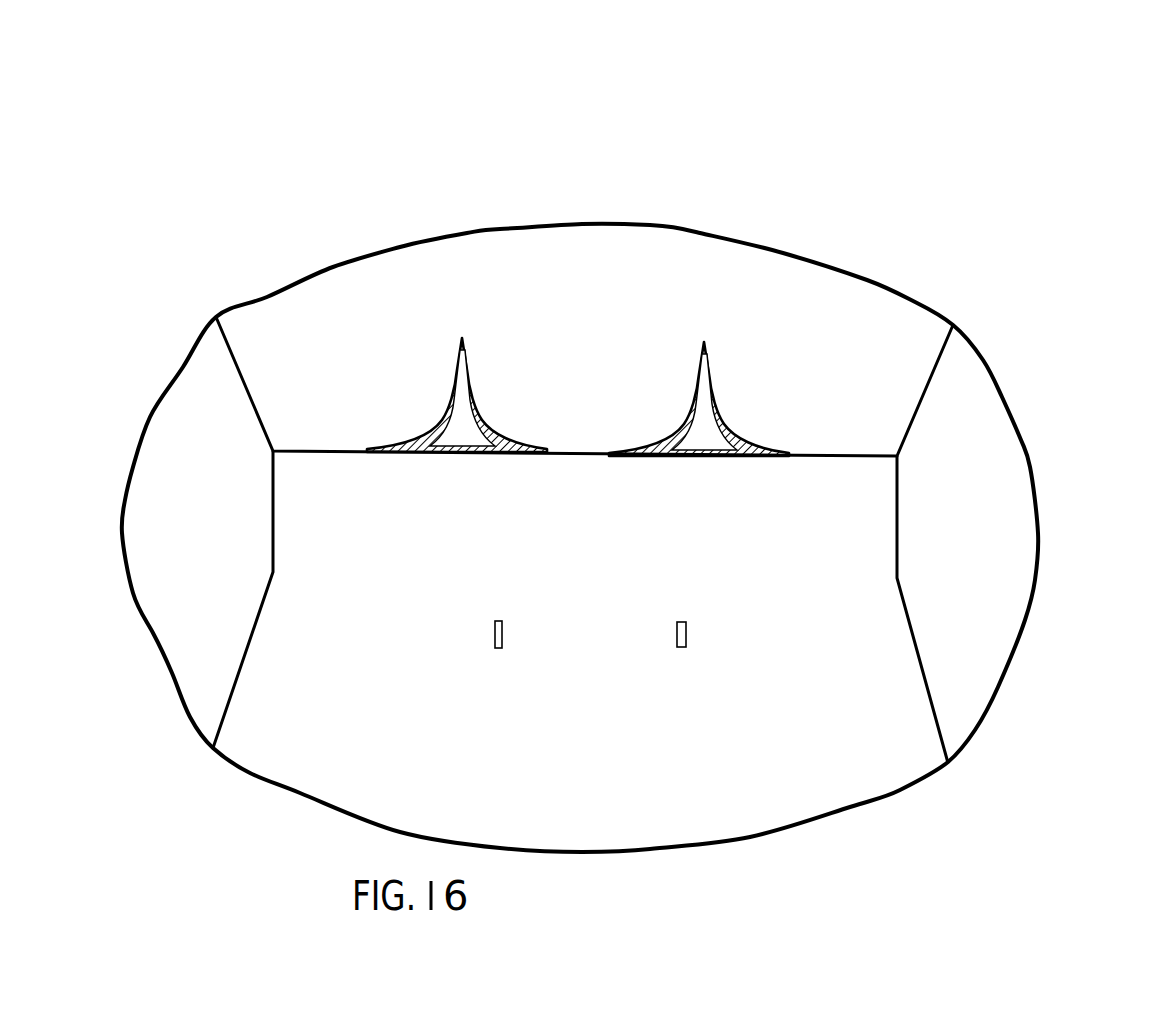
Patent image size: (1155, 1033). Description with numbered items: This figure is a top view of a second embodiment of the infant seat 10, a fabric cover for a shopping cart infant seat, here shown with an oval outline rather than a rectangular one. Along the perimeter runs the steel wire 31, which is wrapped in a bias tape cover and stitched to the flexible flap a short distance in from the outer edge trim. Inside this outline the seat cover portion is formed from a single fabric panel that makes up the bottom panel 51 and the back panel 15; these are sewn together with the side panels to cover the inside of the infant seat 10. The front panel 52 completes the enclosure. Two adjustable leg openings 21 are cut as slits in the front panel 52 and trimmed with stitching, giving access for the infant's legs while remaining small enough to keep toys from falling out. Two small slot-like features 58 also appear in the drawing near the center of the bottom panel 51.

The infant seat 10 is at (777, 225).
The back panel 15 is at (595, 787).
The leg openings 21 is at (450, 430).
The steel wire 31 is at (610, 225).
The bottom panel 51 is at (792, 510).
The front panel 52 is at (520, 275).
The slot 58 is at (493, 638).